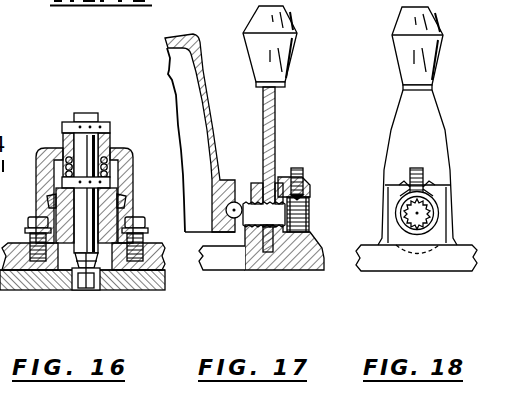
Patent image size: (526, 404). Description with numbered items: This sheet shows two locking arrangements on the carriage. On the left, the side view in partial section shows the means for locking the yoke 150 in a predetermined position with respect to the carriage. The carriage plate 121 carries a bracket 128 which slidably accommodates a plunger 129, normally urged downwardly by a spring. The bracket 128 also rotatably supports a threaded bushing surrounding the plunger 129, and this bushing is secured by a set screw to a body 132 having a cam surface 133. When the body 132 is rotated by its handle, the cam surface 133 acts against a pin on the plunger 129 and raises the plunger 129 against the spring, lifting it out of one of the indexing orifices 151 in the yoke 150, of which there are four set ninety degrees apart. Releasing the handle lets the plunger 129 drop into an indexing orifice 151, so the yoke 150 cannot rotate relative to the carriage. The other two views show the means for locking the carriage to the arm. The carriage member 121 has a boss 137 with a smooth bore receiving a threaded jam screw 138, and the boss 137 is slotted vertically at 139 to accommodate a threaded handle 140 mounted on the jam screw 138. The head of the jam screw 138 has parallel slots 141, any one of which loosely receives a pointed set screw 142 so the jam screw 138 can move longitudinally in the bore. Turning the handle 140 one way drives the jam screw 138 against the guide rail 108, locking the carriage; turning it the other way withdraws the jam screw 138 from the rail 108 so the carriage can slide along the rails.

In FIG. 17, the guide rail 108 is at (226, 209).
In FIG. 16, the carriage plate 121 is at (147, 242).
In FIG. 16, the bracket 128 is at (110, 148).
In FIG. 16, the plunger 129 is at (89, 285).
In FIG. 16, the body 132 is at (128, 170).
In FIG. 16, the cam surface 133 is at (112, 197).
In FIG. 17, the boss 137 is at (309, 185).
In FIG. 17, the jam screw 138 is at (239, 203).
In FIG. 17, the vertical slot 139 is at (272, 186).
In FIG. 17, the handle 140 is at (276, 108).
In FIG. 17, the parallel slots 141 is at (304, 219).
In FIG. 18, the parallel slots 141 is at (407, 212).
In FIG. 17, the pointed set screw 142 is at (303, 171).
In FIG. 18, the pointed set screw 142 is at (416, 168).
In FIG. 16, the yoke 150 is at (160, 289).
In FIG. 16, the indexing orifices 151 is at (81, 284).